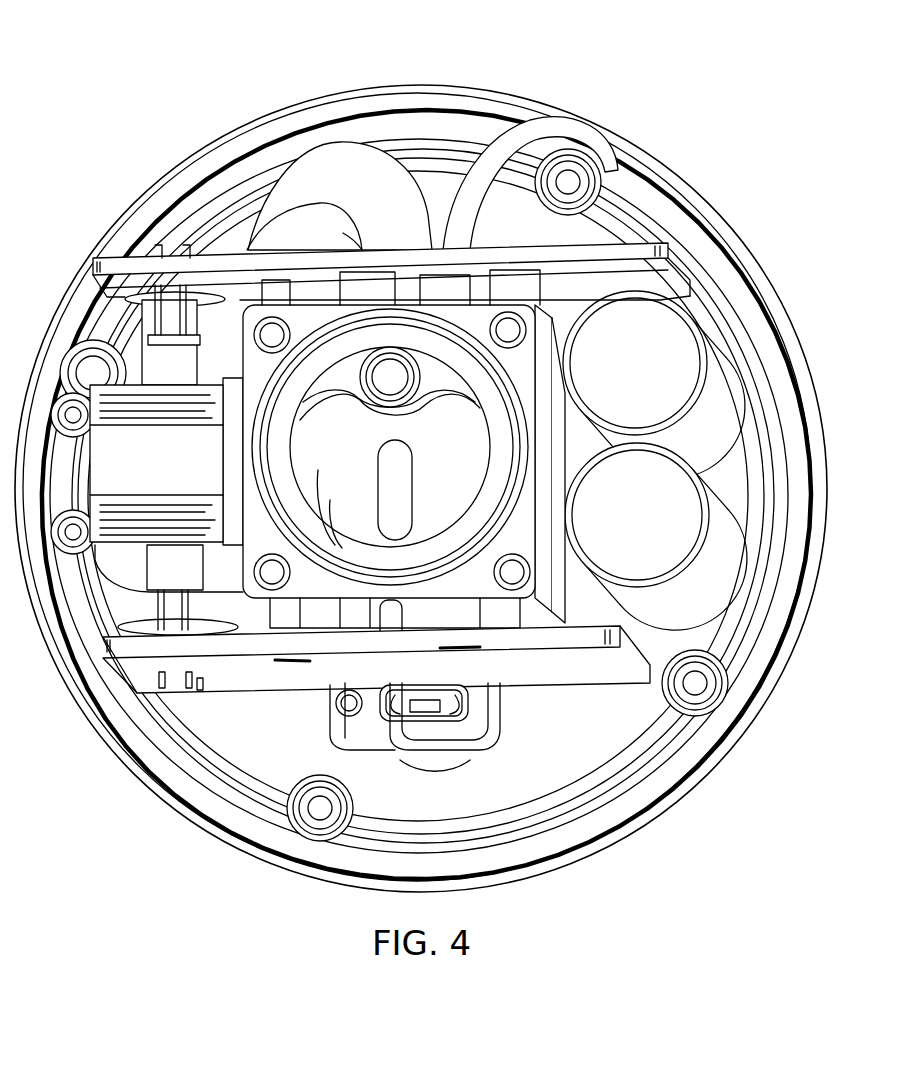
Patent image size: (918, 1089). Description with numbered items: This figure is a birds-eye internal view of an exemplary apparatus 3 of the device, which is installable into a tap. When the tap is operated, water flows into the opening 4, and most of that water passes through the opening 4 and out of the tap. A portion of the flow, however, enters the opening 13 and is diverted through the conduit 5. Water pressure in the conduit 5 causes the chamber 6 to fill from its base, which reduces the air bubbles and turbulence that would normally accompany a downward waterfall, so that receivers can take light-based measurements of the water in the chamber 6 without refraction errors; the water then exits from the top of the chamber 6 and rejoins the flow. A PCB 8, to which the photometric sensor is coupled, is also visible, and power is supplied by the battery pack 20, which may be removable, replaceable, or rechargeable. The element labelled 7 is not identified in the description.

The apparatus 3 is at (162, 70).
The opening 4 is at (442, 472).
The conduit 5 is at (293, 172).
The chamber 6 is at (160, 468).
The bottom circuit board 7 is at (243, 672).
The PCB 8 is at (207, 252).
The opening 13 is at (398, 372).
The battery pack 20 is at (676, 357).